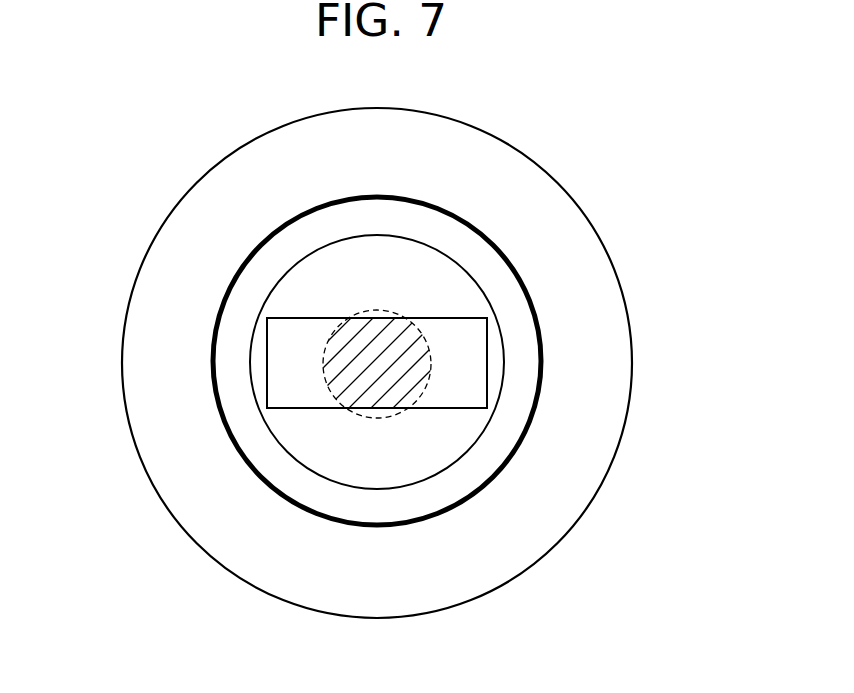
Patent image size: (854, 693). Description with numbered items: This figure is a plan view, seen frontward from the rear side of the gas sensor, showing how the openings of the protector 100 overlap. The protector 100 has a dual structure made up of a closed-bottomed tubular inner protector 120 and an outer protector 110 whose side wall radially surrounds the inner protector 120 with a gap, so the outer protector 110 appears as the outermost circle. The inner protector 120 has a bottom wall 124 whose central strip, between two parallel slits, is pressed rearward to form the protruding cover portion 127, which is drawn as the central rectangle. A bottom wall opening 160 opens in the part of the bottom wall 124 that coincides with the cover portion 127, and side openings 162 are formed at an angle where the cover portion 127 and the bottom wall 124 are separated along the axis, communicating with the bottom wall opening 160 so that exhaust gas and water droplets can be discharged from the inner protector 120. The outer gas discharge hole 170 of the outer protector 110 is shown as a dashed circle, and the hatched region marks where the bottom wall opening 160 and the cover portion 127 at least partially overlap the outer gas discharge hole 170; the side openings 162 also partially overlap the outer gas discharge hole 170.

The protector 100 is at (706, 135).
The outer protector 110 is at (607, 243).
The inner protector 120 is at (505, 253).
The bottom wall 124 is at (450, 440).
The cover portion 127 is at (523, 376).
The bottom wall opening 160 is at (468, 374).
The side openings 162 is at (363, 318).
The outer gas discharge hole 170 is at (383, 412).